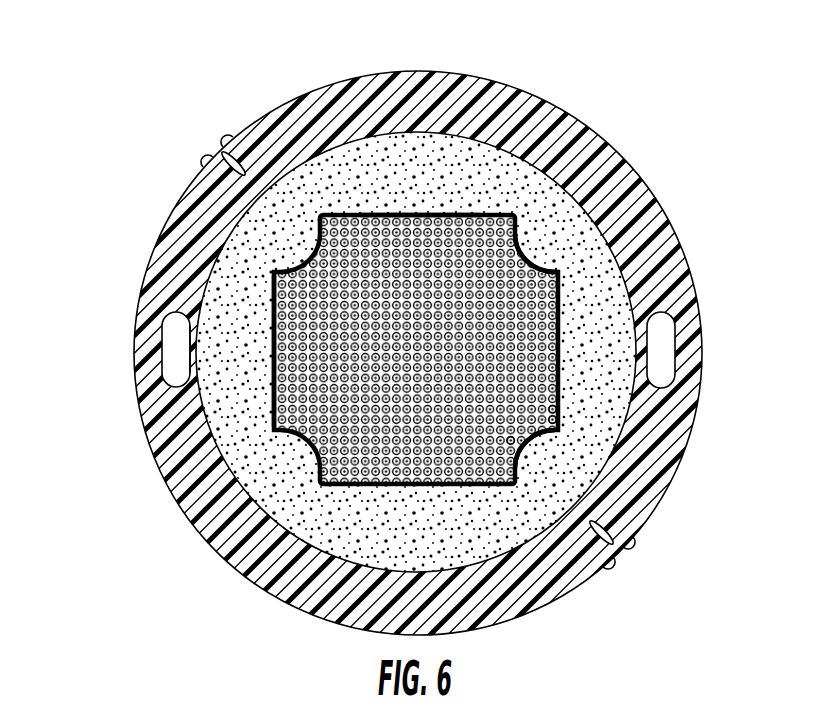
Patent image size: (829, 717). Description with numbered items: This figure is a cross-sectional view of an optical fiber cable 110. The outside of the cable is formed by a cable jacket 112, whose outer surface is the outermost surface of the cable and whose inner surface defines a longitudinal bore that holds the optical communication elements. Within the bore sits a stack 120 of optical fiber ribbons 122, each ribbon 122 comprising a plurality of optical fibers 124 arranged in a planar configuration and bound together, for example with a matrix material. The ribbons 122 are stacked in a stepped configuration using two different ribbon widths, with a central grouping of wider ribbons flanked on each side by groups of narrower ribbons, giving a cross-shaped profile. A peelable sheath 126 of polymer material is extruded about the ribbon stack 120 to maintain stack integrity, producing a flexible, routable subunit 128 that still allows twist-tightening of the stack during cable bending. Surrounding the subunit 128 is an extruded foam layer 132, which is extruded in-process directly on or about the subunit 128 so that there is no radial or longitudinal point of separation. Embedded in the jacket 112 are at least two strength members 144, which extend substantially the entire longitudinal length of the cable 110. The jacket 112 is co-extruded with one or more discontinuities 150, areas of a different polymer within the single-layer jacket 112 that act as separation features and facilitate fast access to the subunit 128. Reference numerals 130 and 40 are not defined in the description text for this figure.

The optical fiber cable 110 is at (414, 345).
The cable jacket 112 is at (277, 102).
The stack of optical fiber ribbons 120 is at (510, 377).
The optical fiber ribbon 122 is at (515, 440).
The optical fiber 124 is at (467, 215).
The sheath 126 is at (272, 415).
The subunit 128 is at (543, 257).
The concave notch wall 130 is at (525, 450).
The foam layer 132 is at (593, 275).
The strength member 144 is at (180, 340).
The slot edge 40 is at (190, 360).
The discontinuity 150 is at (218, 152).